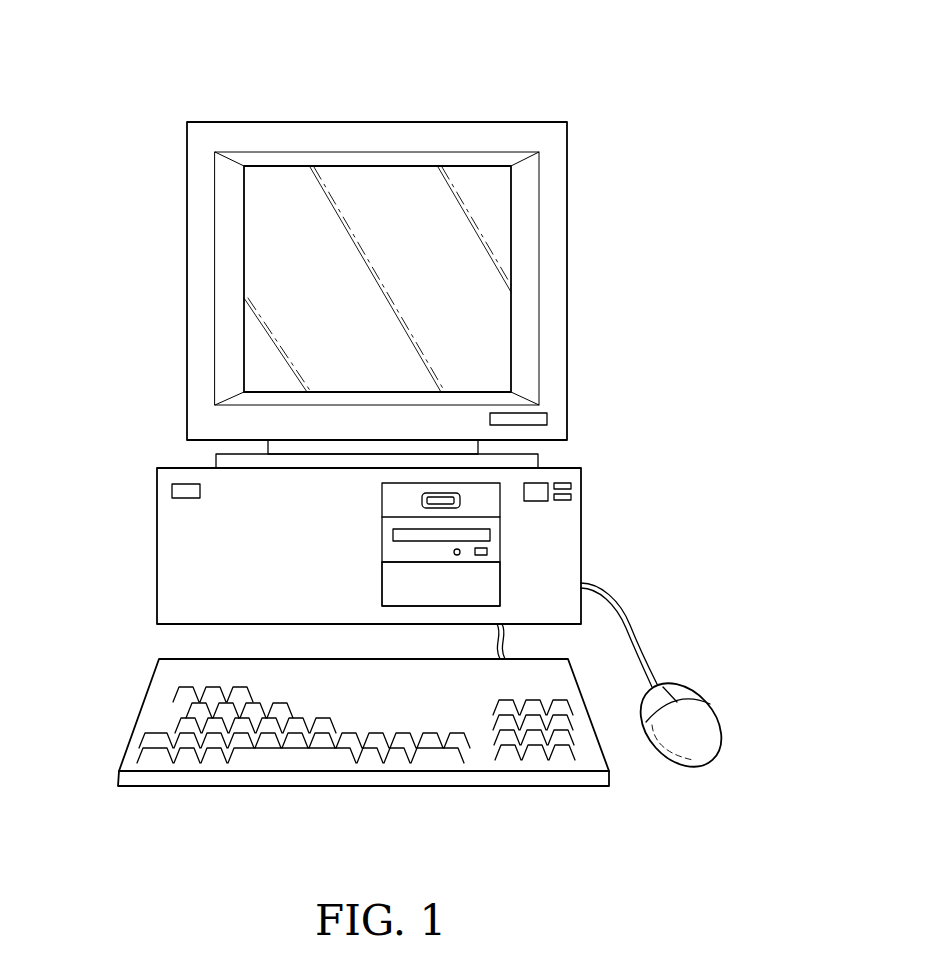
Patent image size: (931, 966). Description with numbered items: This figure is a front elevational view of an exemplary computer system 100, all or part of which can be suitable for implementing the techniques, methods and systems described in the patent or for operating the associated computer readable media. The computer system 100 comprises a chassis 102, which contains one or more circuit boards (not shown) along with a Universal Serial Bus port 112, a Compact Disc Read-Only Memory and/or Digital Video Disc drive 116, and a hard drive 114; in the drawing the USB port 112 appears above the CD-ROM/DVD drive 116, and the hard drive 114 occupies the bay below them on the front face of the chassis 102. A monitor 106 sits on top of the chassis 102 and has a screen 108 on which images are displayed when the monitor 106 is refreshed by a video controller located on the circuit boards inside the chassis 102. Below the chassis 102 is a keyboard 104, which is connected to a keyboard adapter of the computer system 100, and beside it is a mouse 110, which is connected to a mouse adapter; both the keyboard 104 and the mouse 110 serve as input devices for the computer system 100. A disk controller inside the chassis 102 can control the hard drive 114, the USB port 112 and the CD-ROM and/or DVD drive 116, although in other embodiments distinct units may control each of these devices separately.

The computer system 100 is at (559, 98).
The chassis 102 is at (158, 548).
The keyboard 104 is at (140, 714).
The monitor 106 is at (264, 122).
The screen 108 is at (292, 283).
The mouse 110 is at (700, 715).
The Universal Serial Bus (USB) port 112 is at (461, 496).
The hard drive 114 is at (490, 583).
The CD-ROM and/or DVD drive 116 is at (490, 541).